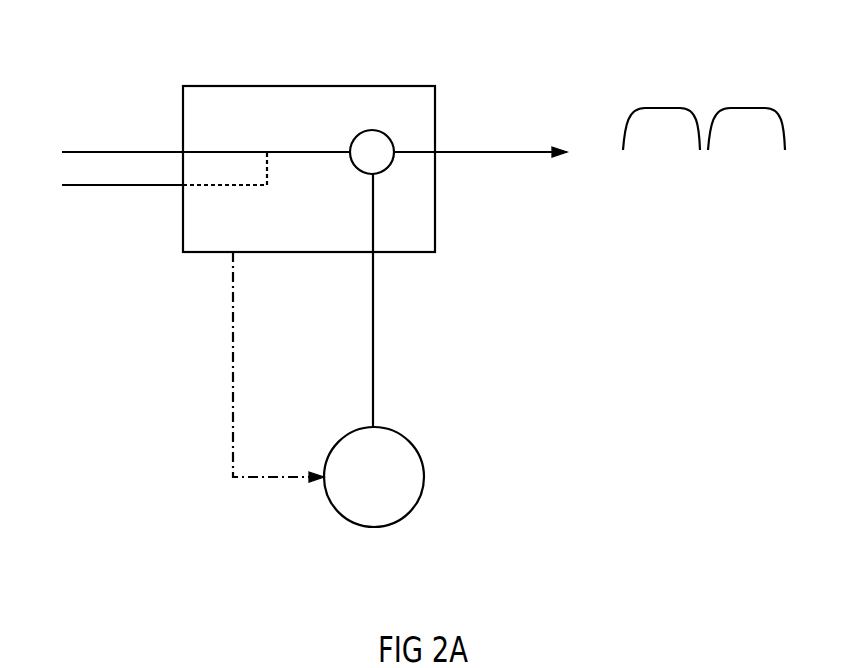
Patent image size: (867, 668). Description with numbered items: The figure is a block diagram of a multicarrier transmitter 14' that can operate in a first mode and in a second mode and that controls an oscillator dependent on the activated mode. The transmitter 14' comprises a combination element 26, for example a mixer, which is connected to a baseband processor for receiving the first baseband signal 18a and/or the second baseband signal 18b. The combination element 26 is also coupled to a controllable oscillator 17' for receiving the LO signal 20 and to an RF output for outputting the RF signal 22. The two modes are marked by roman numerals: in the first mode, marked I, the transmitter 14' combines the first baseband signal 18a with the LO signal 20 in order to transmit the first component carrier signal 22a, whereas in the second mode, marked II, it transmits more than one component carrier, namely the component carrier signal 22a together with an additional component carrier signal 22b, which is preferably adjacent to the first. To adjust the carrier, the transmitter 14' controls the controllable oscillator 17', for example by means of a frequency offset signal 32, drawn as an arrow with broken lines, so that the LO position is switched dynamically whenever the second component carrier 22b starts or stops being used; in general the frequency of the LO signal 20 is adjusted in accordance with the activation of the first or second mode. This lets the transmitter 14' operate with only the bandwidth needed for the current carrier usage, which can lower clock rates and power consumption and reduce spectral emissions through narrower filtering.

The multicarrier transmitter 14' is at (375, 221).
The combination element 26 is at (372, 130).
The first baseband signal 18a is at (85, 141).
The second baseband signal 18b is at (88, 195).
The frequency offset signal 32 is at (233, 348).
The LO signal 20 is at (373, 385).
The controllable oscillator 17' is at (374, 516).
The RF signal 22 is at (763, 33).
The first component carrier signal 22a is at (660, 108).
The second component carrier signal 22b is at (743, 108).